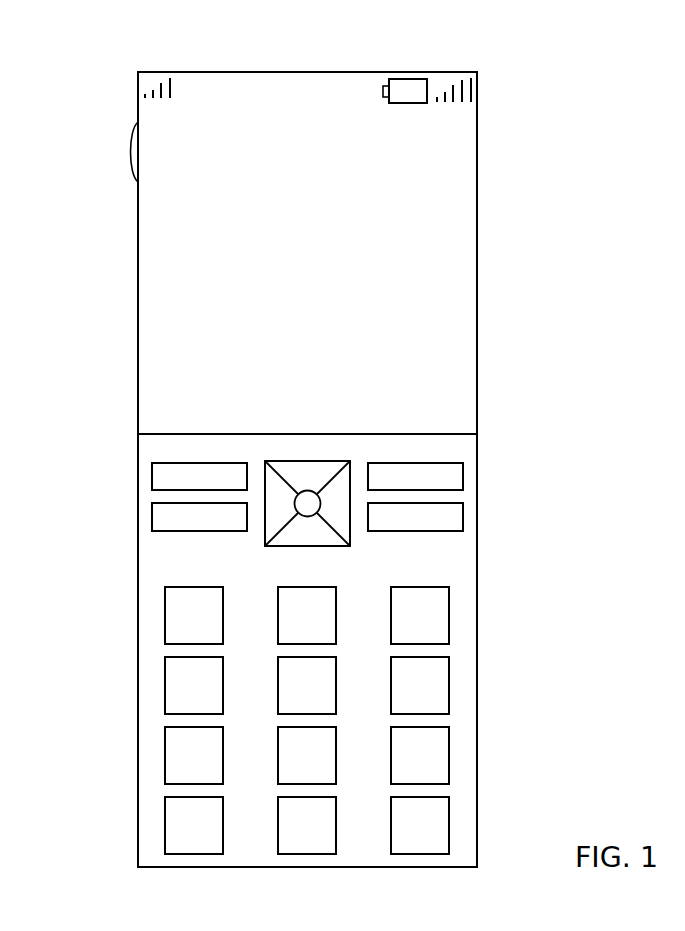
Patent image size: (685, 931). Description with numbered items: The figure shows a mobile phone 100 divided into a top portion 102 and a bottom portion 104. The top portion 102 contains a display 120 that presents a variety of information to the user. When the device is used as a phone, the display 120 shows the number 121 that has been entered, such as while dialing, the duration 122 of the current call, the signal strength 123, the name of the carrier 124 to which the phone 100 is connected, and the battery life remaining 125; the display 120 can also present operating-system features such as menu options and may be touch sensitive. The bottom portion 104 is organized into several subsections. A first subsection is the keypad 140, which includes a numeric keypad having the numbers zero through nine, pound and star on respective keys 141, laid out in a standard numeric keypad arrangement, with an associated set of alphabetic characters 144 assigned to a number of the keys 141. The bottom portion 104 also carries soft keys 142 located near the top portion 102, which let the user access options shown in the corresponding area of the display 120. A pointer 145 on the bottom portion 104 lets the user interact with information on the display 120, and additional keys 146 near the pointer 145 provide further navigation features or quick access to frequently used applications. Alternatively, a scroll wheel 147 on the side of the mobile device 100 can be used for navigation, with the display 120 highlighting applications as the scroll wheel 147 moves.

The mobile phone 100 is at (381, 454).
The top portion 102 is at (477, 228).
The bottom portion 104 is at (477, 655).
The display 120 is at (160, 250).
The number 121 is at (413, 397).
The duration 122 is at (405, 325).
The signal strength 123 is at (160, 80).
The carrier 124 is at (213, 76).
The battery life remaining 125 is at (433, 78).
The keypad 140 is at (487, 716).
The keys 141 is at (165, 617).
The soft keys 142 is at (152, 475).
The alphabetic characters 144 is at (438, 601).
The pointer 145 is at (307, 505).
The additional keys 146 is at (318, 537).
The scroll wheel 147 is at (122, 151).